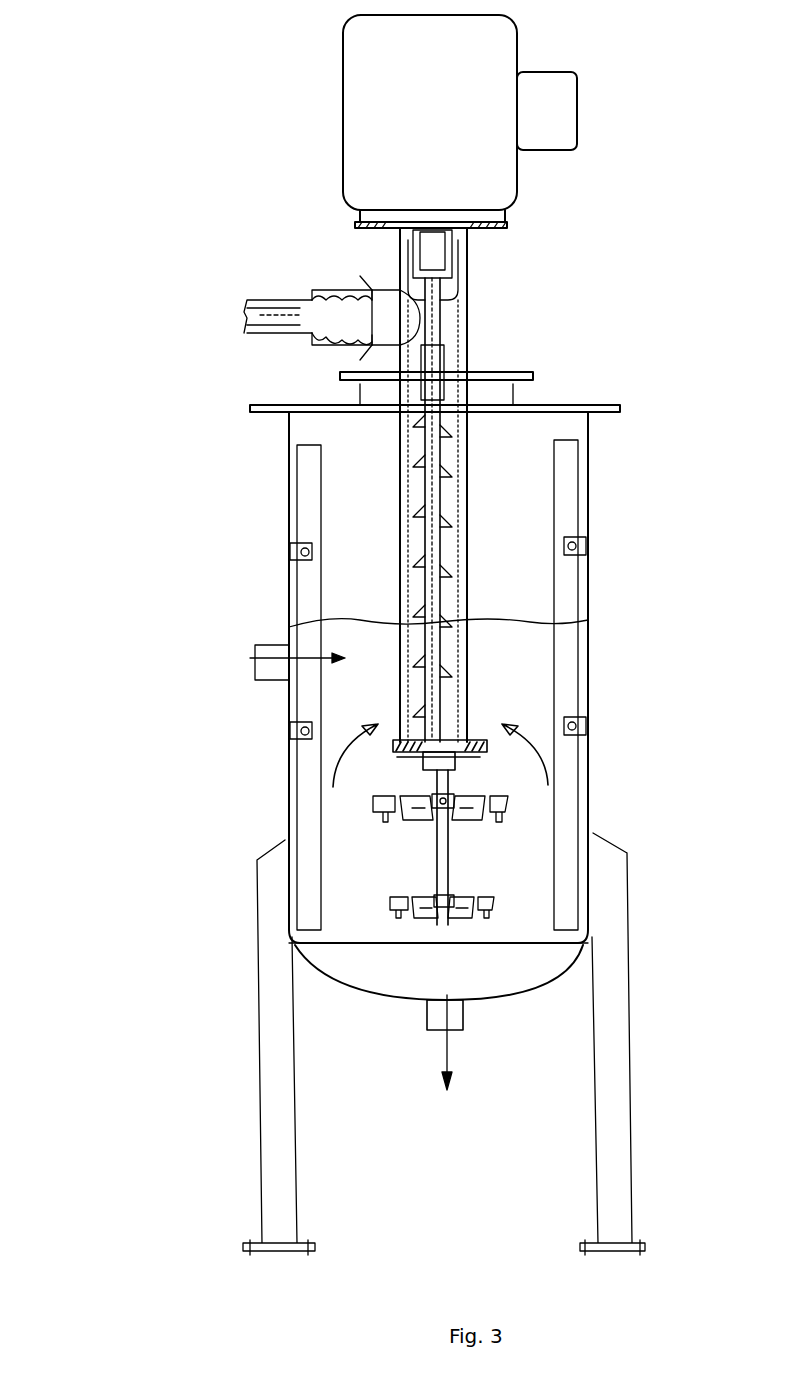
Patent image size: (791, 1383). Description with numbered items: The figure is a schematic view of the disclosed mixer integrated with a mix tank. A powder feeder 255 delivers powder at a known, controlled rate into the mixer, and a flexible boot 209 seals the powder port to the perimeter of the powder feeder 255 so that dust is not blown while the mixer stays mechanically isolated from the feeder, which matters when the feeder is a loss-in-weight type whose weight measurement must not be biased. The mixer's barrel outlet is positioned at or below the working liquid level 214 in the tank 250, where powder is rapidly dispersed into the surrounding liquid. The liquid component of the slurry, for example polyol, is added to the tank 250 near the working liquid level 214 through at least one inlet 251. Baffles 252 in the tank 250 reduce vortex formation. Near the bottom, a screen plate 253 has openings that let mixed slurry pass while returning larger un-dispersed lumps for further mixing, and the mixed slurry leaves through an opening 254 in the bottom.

The flexible boot 209 is at (310, 330).
The powder feeder 255 is at (247, 335).
The working liquid level 214 is at (358, 620).
The tank 250 is at (590, 520).
The baffles 252 is at (572, 630).
The inlet 251 is at (262, 673).
The screen plate 253 is at (445, 945).
The opening 254 is at (445, 1030).